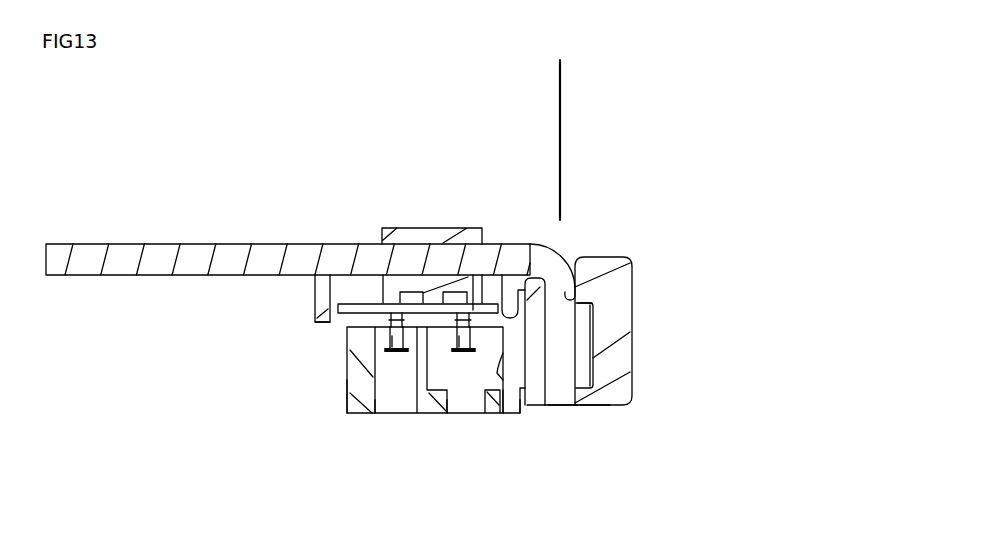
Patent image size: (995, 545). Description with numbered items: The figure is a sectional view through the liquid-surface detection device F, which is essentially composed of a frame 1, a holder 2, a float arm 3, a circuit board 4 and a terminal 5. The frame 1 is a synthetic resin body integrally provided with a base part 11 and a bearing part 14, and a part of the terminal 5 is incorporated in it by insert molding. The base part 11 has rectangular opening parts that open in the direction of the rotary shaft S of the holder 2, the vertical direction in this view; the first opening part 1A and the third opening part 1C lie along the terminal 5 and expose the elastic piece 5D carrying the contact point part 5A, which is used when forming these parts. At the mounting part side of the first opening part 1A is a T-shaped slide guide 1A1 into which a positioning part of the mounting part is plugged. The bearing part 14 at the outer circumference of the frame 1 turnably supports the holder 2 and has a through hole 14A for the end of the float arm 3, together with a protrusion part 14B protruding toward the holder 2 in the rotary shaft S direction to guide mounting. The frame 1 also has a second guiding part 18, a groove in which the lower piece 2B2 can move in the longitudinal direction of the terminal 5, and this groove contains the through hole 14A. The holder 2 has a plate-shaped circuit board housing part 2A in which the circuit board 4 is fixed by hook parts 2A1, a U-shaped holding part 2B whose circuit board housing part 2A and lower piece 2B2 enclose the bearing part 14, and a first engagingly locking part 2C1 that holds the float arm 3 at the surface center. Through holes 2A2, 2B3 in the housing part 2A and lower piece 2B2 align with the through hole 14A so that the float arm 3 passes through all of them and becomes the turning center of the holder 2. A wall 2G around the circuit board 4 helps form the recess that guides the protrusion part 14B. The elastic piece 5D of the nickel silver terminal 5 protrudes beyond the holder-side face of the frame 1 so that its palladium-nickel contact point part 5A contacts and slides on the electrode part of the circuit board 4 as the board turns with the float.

The frame 1 is at (396, 406).
The base part 11 is at (363, 395).
The first opening part 1A is at (507, 402).
The slide guide 1A1 is at (458, 403).
The third opening part 1C is at (383, 398).
The second guiding part 18 is at (523, 412).
The holder 2 is at (478, 331).
The circuit board housing part 2A is at (323, 293).
The hook part 2A1 is at (516, 290).
The through hole 2A2 is at (547, 330).
The holding part 2B is at (622, 352).
The lower piece 2B2 is at (590, 407).
The through hole 2B3 is at (568, 407).
The first engagingly locking part 2C1 is at (418, 228).
The wall 2G is at (315, 322).
The float arm 3 is at (158, 250).
The circuit board 4 is at (380, 298).
The terminal 5 is at (403, 372).
The contact point part 5A is at (455, 302).
The elastic piece 5D is at (387, 337).
The bearing part 14 is at (587, 367).
The through hole 14A is at (538, 410).
The protrusion part 14B is at (593, 313).
The rotary shaft S is at (562, 141).
The liquid-surface detection device F is at (320, 199).